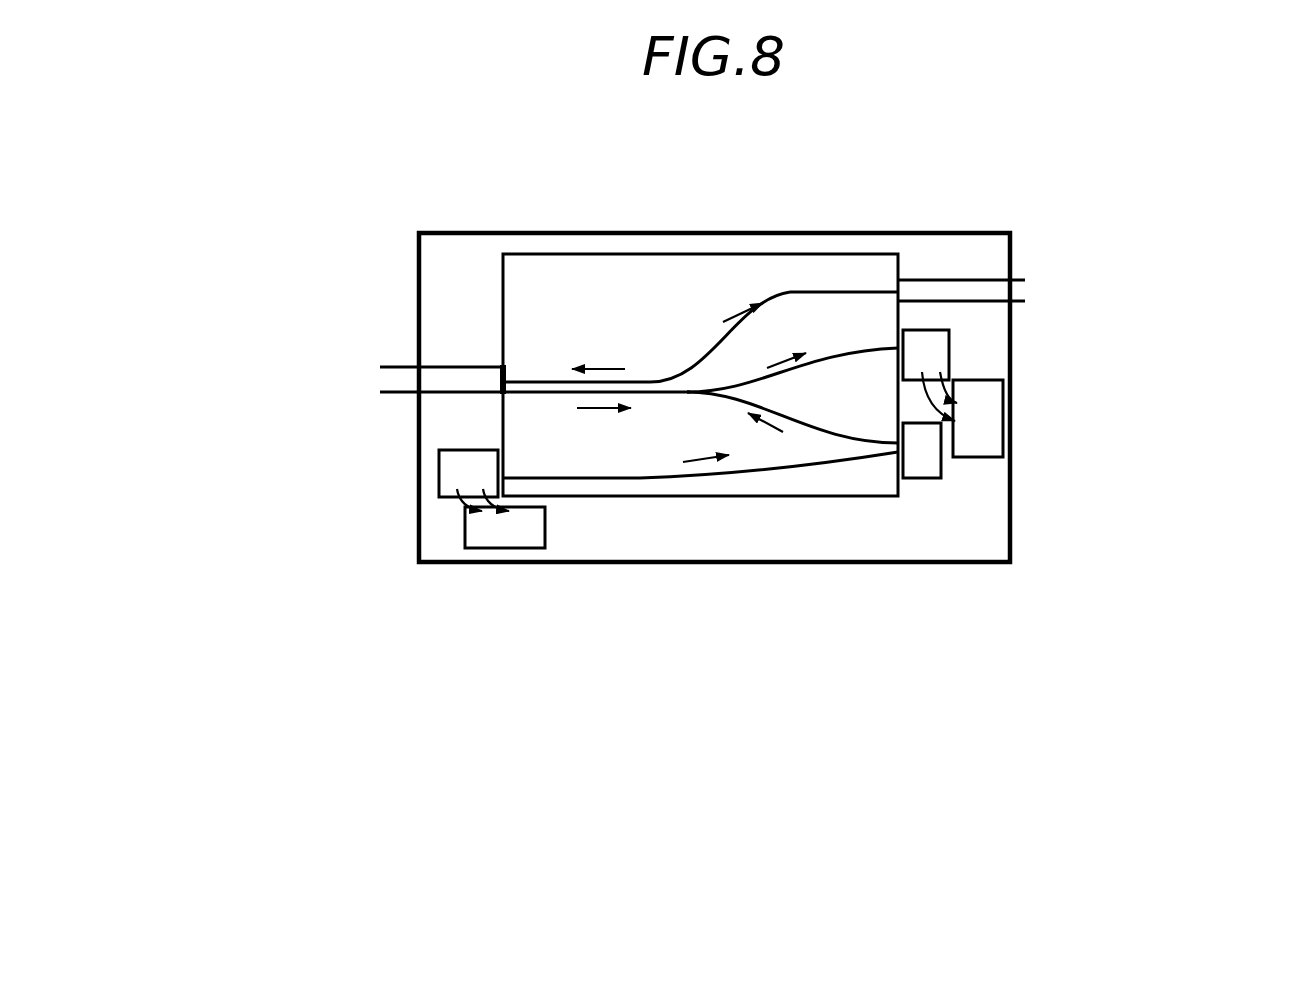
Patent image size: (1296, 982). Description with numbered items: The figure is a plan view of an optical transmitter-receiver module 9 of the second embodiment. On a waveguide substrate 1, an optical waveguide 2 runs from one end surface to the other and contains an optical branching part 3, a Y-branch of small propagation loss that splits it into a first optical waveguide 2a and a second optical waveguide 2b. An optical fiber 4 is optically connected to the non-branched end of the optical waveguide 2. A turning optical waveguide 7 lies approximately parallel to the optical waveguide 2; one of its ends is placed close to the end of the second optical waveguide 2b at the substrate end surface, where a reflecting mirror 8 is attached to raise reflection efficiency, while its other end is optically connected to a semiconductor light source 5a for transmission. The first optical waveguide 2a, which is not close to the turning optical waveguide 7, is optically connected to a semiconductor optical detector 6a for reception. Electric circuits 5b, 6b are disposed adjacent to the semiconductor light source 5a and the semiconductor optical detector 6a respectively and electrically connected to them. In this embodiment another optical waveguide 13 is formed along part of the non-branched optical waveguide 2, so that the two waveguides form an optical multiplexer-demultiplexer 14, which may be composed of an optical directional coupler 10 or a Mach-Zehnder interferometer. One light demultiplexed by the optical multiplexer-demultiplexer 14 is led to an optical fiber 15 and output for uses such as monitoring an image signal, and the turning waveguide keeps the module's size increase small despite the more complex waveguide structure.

The waveguide substrate 1 is at (873, 497).
The optical waveguide 2 is at (585, 434).
The first optical waveguide 2a is at (873, 292).
The second optical waveguide 2b is at (843, 435).
The optical branching part 3 is at (688, 392).
The optical fiber 4 is at (450, 378).
The semiconductor light source 5a is at (450, 477).
The electric circuit 5b is at (485, 540).
The semiconductor optical detector 6a is at (943, 357).
The electric circuit 6b is at (987, 428).
The turning optical waveguide 7 is at (647, 478).
The reflecting mirror 8 is at (925, 467).
The optical transmitter-receiver module 9 is at (958, 563).
The optical directional coupler 10 is at (885, 447).
The optical waveguide 13 is at (783, 298).
The optical multiplexer-demultiplexer 14 is at (573, 382).
The optical fiber 15 is at (960, 290).